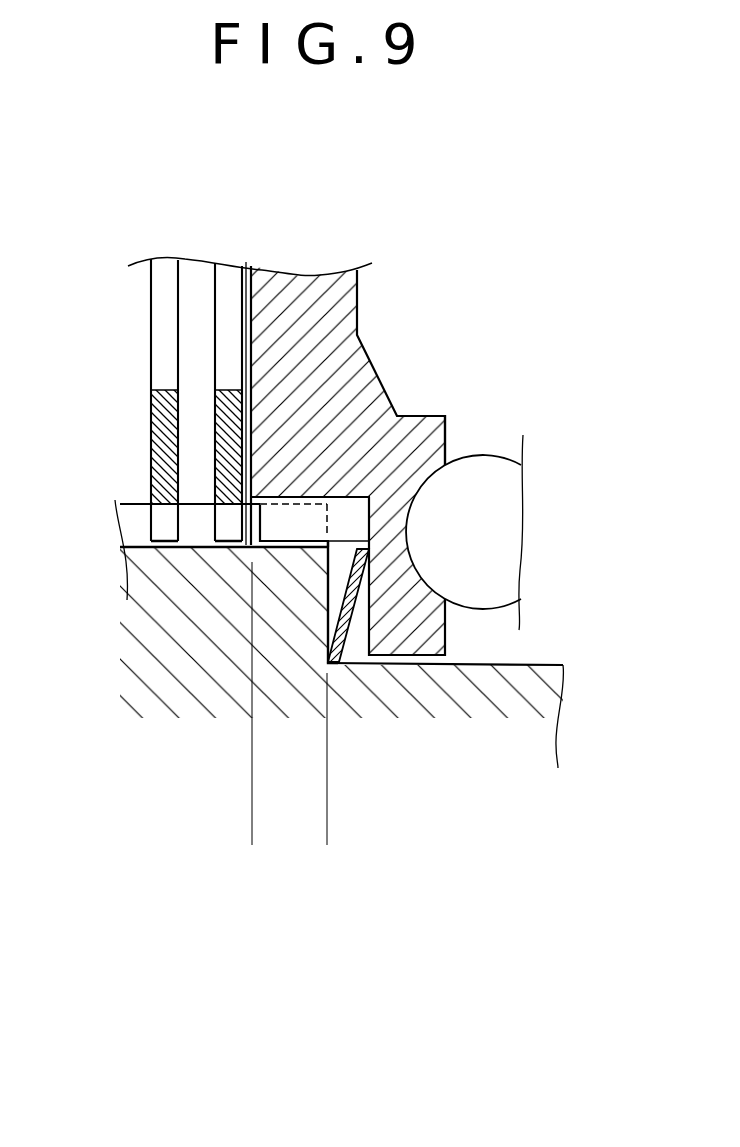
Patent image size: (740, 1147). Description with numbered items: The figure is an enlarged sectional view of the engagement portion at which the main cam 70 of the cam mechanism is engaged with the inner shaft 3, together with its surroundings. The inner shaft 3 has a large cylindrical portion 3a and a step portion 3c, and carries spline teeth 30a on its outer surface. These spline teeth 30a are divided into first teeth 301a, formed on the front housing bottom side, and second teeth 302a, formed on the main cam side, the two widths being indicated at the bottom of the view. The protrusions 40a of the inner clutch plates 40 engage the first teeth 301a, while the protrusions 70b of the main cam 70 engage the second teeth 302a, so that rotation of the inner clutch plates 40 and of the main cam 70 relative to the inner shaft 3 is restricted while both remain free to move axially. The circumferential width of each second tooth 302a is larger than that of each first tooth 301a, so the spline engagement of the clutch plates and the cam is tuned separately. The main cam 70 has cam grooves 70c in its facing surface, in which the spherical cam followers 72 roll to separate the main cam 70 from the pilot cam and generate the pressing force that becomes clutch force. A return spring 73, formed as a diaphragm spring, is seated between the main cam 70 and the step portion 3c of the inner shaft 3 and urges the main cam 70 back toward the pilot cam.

The main cam 70 is at (337, 320).
The protrusions 70b is at (444, 419).
The cam grooves 70c is at (410, 553).
The cam followers 72 is at (510, 485).
The inner clutch plates 40 is at (227, 307).
The protrusions 40a is at (222, 531).
The inner shaft 3 is at (557, 678).
The large cylindrical portion 3a is at (128, 649).
The step portion 3c is at (328, 592).
The return spring 73 is at (346, 624).
The first teeth 301a is at (247, 855).
The second teeth 302a is at (327, 855).
The spline teeth 30a is at (342, 910).